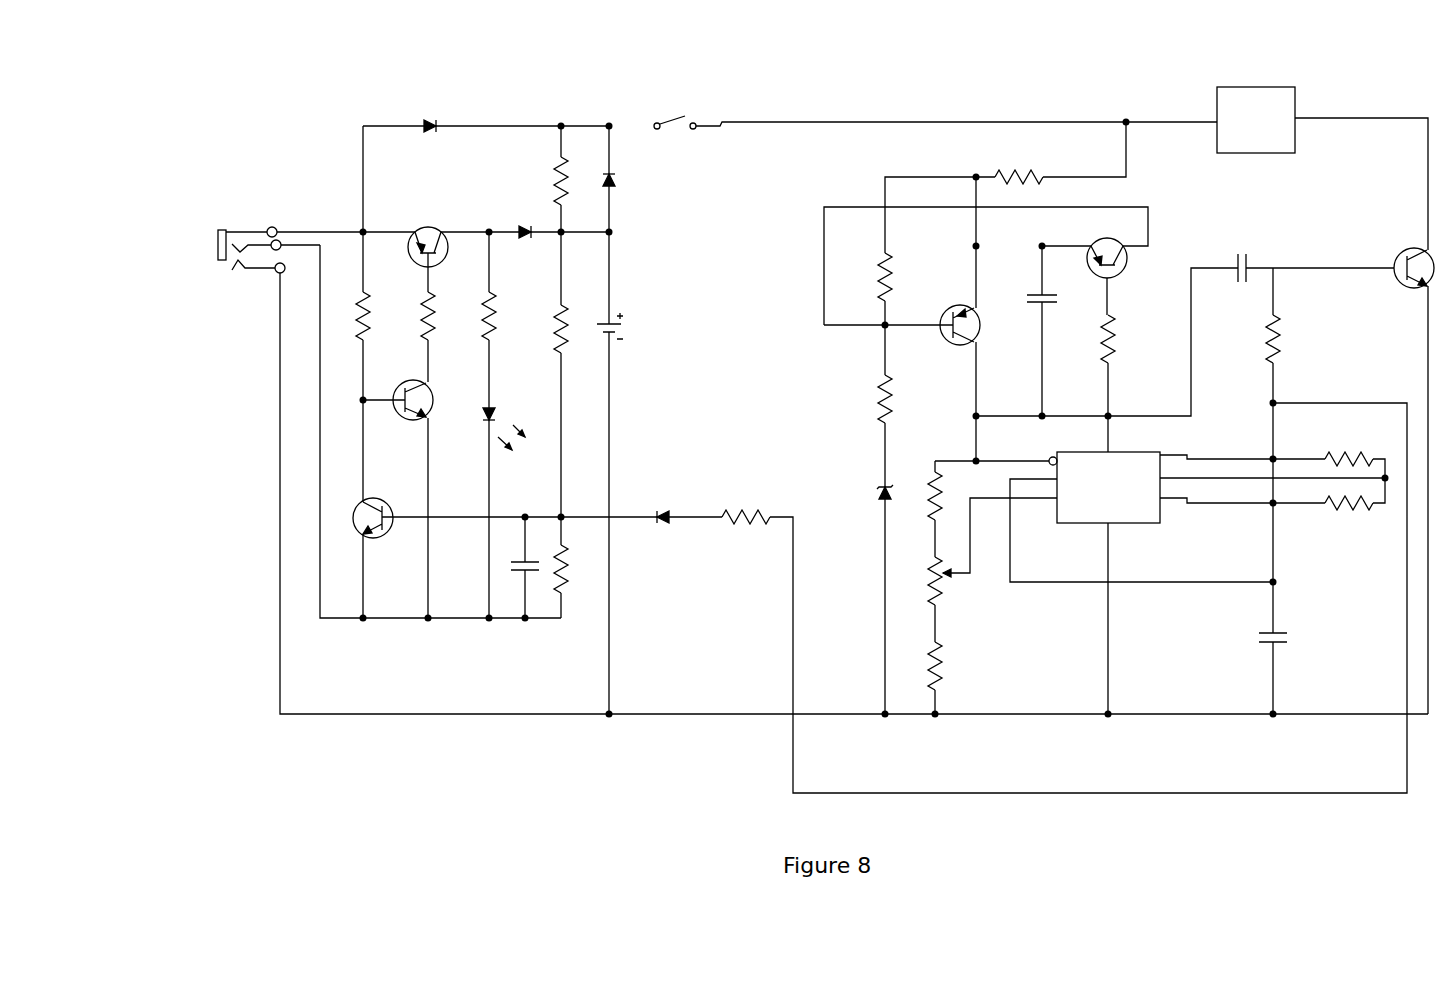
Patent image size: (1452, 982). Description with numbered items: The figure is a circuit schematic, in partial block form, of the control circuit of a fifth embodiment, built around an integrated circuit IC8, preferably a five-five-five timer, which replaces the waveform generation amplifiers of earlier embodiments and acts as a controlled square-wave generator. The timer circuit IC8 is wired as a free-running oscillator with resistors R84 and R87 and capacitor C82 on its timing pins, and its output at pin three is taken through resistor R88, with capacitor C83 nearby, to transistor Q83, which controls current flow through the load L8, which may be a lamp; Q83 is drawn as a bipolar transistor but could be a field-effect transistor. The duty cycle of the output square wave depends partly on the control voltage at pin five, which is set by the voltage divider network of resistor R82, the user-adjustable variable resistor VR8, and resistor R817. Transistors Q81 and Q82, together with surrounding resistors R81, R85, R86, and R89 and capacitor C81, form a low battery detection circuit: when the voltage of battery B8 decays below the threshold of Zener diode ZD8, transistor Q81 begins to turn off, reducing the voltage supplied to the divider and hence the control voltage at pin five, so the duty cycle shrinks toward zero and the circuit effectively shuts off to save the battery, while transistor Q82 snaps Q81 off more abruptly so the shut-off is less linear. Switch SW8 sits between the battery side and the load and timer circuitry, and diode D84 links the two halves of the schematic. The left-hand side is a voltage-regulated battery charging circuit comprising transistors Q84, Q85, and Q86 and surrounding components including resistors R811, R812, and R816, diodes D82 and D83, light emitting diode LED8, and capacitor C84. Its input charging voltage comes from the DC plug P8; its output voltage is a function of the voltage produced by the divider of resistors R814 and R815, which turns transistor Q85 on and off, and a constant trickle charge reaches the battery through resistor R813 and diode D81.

The DC plug P8 is at (225, 230).
The resistor R811 is at (360, 296).
The resistor R812 is at (418, 327).
The resistor R813 is at (536, 181).
The resistor R814 is at (570, 565).
The resistor R815 is at (550, 333).
The resistor R816 is at (495, 317).
The resistor R817 is at (967, 666).
The resistor R81 is at (1020, 163).
The resistor R82 is at (928, 488).
The resistor R84 is at (1350, 445).
The resistor R85 is at (862, 277).
The resistor R86 is at (860, 399).
The resistor R87 is at (1350, 517).
The resistor R88 is at (1299, 339).
The resistor R89 is at (1134, 339).
The variable resistor VR8 is at (960, 587).
The transistor Q81 is at (954, 311).
The transistor Q82 is at (1107, 247).
The transistor Q83 is at (1403, 255).
The transistor Q84 is at (398, 391).
The transistor Q85 is at (385, 507).
The transistor Q86 is at (429, 235).
The diode D81 is at (428, 115).
The diode D82 is at (637, 182).
The diode D83 is at (526, 219).
The diode D84 is at (708, 505).
The light emitting diode LED8 is at (523, 426).
The Zener diode ZD8 is at (860, 495).
The battery B8 is at (631, 328).
The switch SW8 is at (677, 107).
The load L8 is at (1261, 90).
The capacitor C81 is at (1027, 288).
The capacitor C82 is at (1253, 627).
The capacitor C83 is at (1243, 256).
The capacitor C84 is at (517, 567).
The integrated circuit IC8 is at (1087, 523).